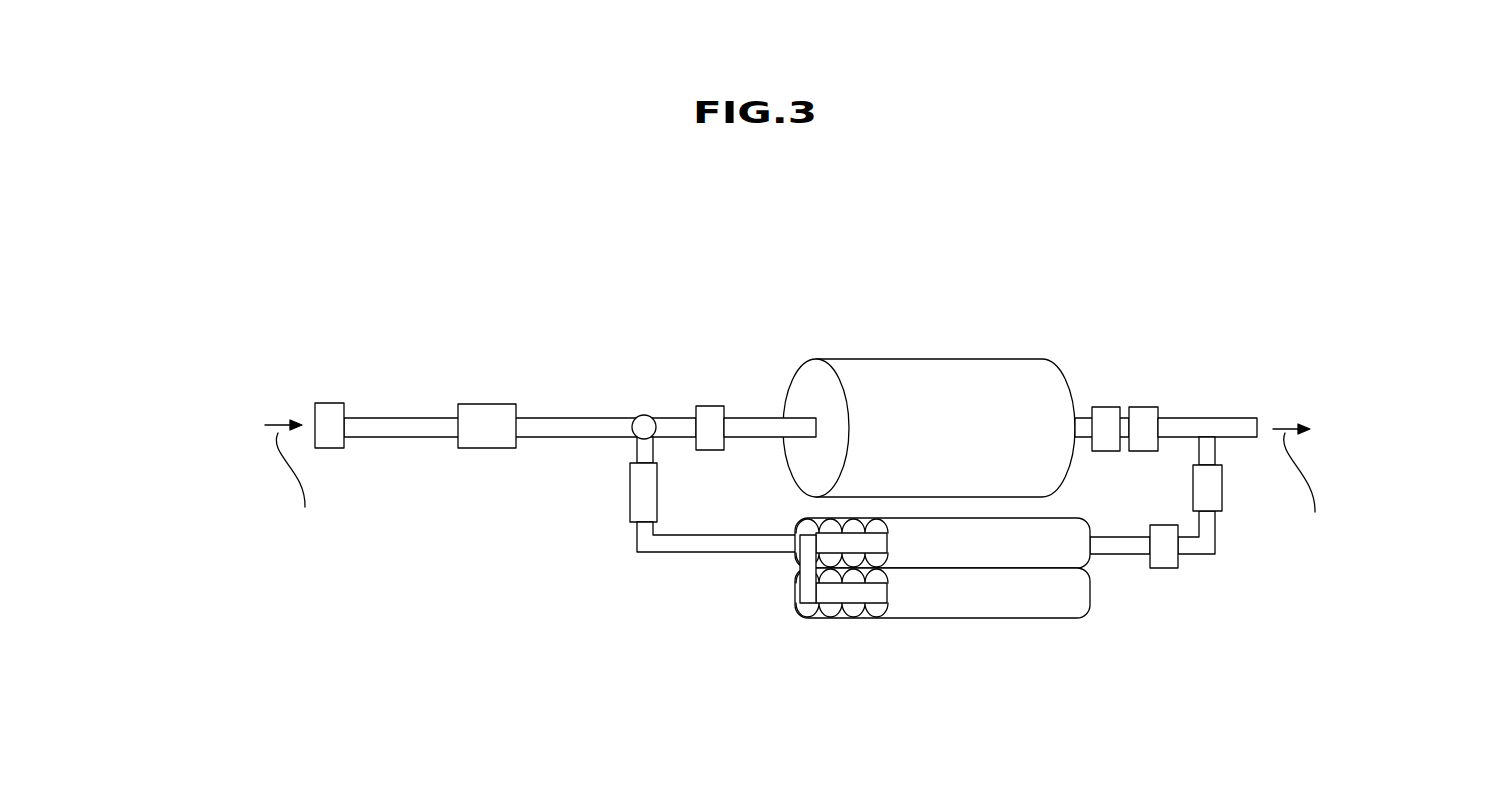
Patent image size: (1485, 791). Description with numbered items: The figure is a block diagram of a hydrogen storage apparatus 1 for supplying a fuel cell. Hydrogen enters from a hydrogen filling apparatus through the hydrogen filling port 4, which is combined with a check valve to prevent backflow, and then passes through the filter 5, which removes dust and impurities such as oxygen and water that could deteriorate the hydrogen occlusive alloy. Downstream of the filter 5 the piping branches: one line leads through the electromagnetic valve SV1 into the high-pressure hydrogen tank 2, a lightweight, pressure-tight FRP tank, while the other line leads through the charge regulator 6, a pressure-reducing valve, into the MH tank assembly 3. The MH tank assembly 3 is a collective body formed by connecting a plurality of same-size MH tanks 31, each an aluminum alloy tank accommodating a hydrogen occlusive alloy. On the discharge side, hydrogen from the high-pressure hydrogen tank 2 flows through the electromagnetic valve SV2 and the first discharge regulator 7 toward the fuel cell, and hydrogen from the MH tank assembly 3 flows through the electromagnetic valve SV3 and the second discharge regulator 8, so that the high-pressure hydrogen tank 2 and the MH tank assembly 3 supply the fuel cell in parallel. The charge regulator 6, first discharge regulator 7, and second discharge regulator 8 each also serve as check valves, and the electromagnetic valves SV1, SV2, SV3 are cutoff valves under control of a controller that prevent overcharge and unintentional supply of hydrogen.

The hydrogen storage apparatus 1 is at (850, 286).
The high-pressure hydrogen tank 2 is at (933, 358).
The MH tank assembly 3 is at (970, 625).
The MH tank 31 is at (1078, 555).
The hydrogen filling port 4 is at (333, 403).
The filter 5 is at (478, 404).
The charge regulator 6 is at (630, 495).
The first discharge regulator 7 is at (1148, 407).
The second discharge regulator 8 is at (1222, 488).
The electromagnetic valve SV1 is at (717, 406).
The electromagnetic valve SV2 is at (1112, 407).
The electromagnetic valve SV3 is at (1165, 568).